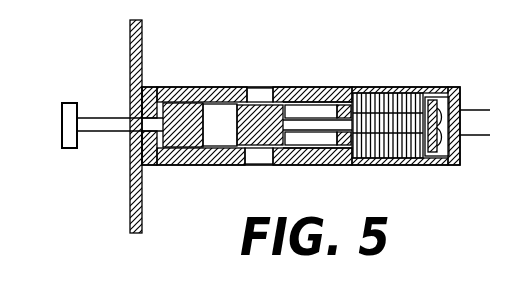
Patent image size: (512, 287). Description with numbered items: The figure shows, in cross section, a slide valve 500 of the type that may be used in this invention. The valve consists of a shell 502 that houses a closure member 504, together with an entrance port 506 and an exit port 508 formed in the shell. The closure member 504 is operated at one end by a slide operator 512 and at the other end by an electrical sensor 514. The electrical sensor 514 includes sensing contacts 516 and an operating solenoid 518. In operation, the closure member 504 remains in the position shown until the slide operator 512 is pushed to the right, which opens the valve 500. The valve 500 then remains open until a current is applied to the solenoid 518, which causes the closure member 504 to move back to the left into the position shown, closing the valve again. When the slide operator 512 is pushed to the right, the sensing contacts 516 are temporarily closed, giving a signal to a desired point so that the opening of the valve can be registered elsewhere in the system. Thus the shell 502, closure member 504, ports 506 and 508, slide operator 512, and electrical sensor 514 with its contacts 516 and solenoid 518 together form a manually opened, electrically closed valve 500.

The valve 500 is at (316, 100).
The shell 502 is at (182, 87).
The closure member 504 is at (246, 136).
The entrance port 506 is at (252, 88).
The exit port 508 is at (263, 160).
The slide operator 512 is at (70, 103).
The electrical sensor 514 is at (440, 87).
The sensing contacts 516 is at (455, 137).
The operating solenoid 518 is at (383, 87).